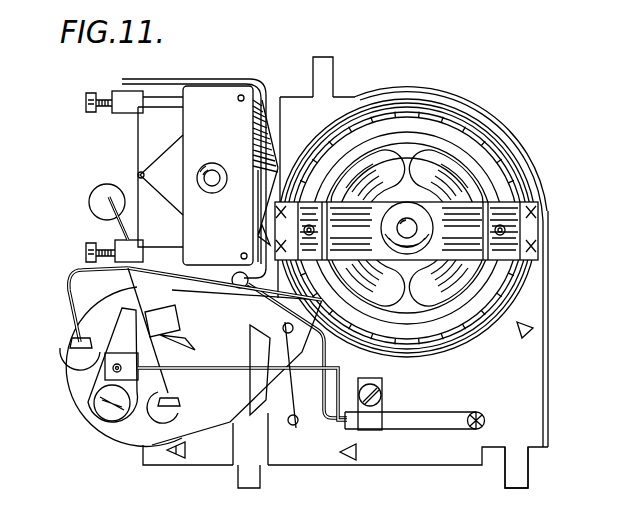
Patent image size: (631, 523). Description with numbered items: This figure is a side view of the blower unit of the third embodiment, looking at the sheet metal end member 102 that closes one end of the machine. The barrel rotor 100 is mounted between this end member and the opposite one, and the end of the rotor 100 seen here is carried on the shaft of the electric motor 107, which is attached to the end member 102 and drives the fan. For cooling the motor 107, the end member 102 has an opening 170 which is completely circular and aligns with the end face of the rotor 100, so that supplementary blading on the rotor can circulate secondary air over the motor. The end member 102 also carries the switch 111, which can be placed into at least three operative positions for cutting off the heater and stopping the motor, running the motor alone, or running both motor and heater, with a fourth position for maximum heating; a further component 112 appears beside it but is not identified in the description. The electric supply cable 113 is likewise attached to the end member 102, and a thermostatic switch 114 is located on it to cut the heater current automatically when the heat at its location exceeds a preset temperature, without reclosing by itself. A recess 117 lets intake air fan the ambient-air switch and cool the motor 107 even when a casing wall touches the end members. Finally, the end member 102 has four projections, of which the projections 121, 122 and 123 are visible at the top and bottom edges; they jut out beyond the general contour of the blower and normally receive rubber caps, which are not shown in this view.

The barrel rotor 100 is at (410, 204).
The sheet metal end member 102 is at (513, 362).
The electric motor 107 is at (409, 153).
The switch 111 is at (150, 140).
The knob 112 is at (97, 203).
The electric supply cable 113 is at (397, 420).
The thermostatic switch 114 is at (122, 340).
The recess 117 is at (295, 90).
The projection 121 is at (330, 78).
The projection 122 is at (247, 478).
The projection 123 is at (518, 479).
The opening 170 is at (497, 160).